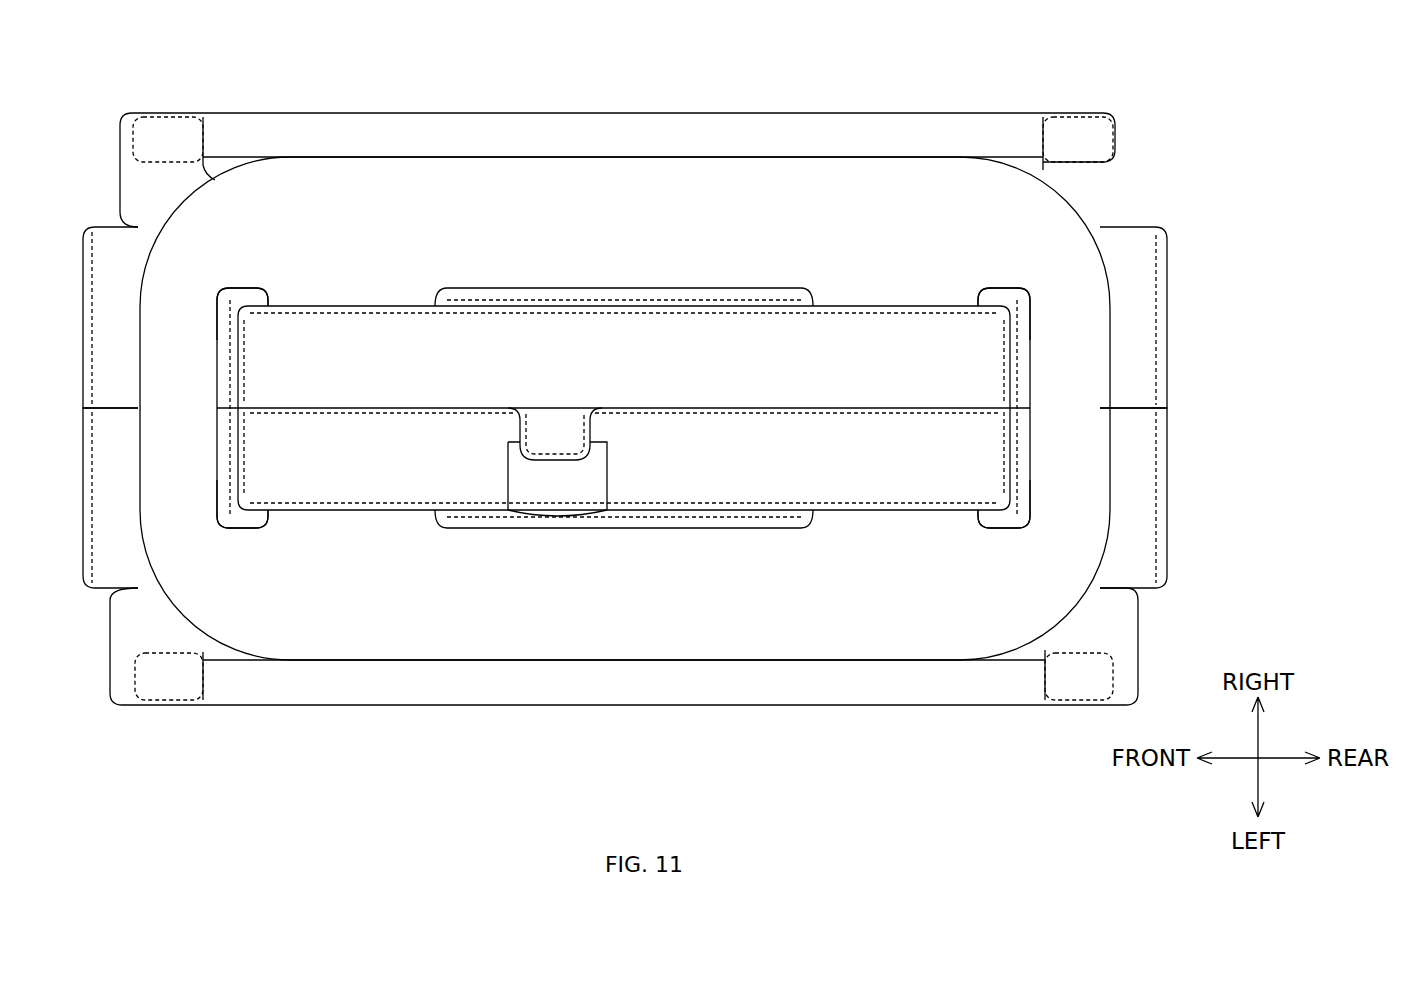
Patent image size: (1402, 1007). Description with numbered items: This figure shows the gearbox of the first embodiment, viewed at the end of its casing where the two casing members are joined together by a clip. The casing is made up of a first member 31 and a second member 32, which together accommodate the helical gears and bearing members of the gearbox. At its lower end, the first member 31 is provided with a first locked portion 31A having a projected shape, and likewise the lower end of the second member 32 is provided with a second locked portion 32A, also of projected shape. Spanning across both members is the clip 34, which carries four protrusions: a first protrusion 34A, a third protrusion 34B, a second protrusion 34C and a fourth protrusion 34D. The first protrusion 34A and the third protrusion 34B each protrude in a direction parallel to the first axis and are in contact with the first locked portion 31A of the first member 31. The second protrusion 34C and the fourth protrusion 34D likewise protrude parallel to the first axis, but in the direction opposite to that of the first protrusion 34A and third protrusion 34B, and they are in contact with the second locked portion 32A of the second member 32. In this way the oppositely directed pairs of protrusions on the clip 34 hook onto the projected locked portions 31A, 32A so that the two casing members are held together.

The first member 31 is at (850, 706).
The first locked portion 31A is at (995, 470).
The second member 32 is at (855, 112).
The second locked portion 32A is at (995, 345).
The clip 34 is at (1070, 233).
The first protrusion 34A is at (905, 522).
The third protrusion 34B is at (352, 522).
The second protrusion 34C is at (905, 292).
The fourth protrusion 34D is at (352, 293).